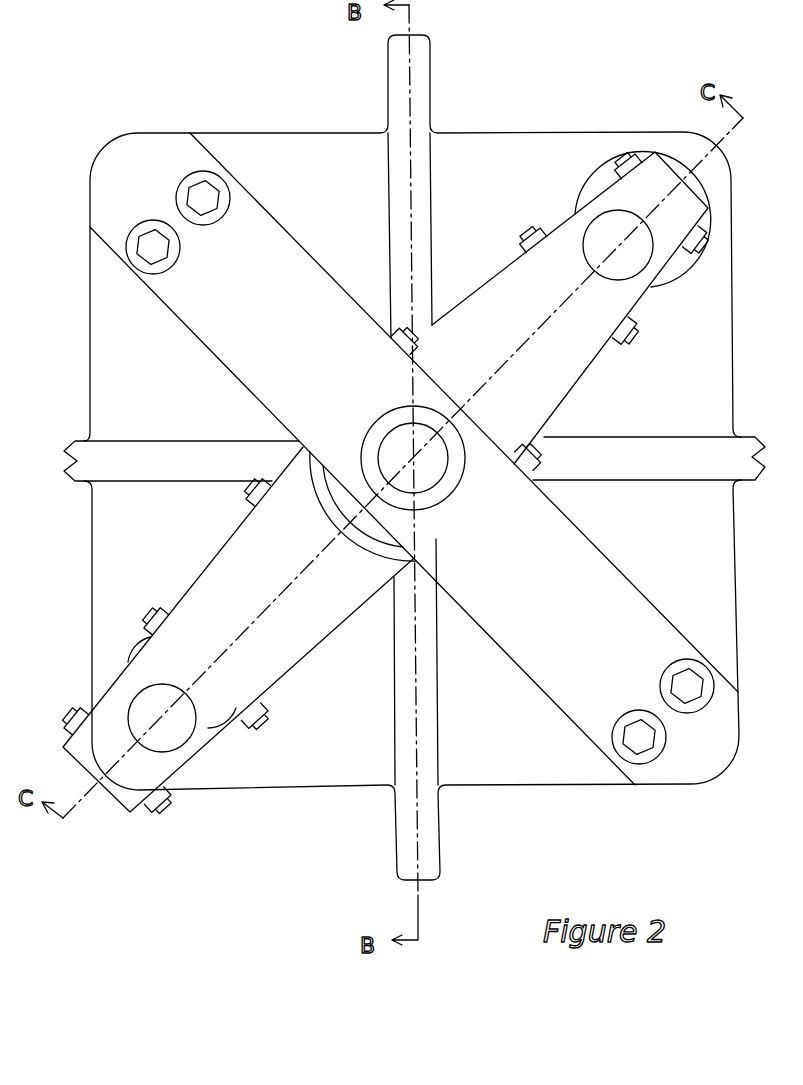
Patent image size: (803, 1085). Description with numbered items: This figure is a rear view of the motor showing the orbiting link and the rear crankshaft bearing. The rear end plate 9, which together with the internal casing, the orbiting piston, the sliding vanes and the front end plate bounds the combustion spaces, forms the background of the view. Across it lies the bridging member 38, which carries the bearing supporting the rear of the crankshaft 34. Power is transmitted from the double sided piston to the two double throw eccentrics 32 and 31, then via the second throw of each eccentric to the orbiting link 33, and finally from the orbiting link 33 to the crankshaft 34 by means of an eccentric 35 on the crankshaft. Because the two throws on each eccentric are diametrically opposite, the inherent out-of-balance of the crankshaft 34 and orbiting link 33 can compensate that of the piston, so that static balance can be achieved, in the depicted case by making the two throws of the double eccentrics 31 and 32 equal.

The rear end plate 9 is at (414, 457).
The double throw eccentric 31 is at (618, 245).
The double throw eccentric 32 is at (236, 632).
The orbiting link 33 is at (572, 306).
The crankshaft 34 is at (413, 458).
The eccentric 35 is at (363, 506).
The bridging member 38 is at (414, 459).